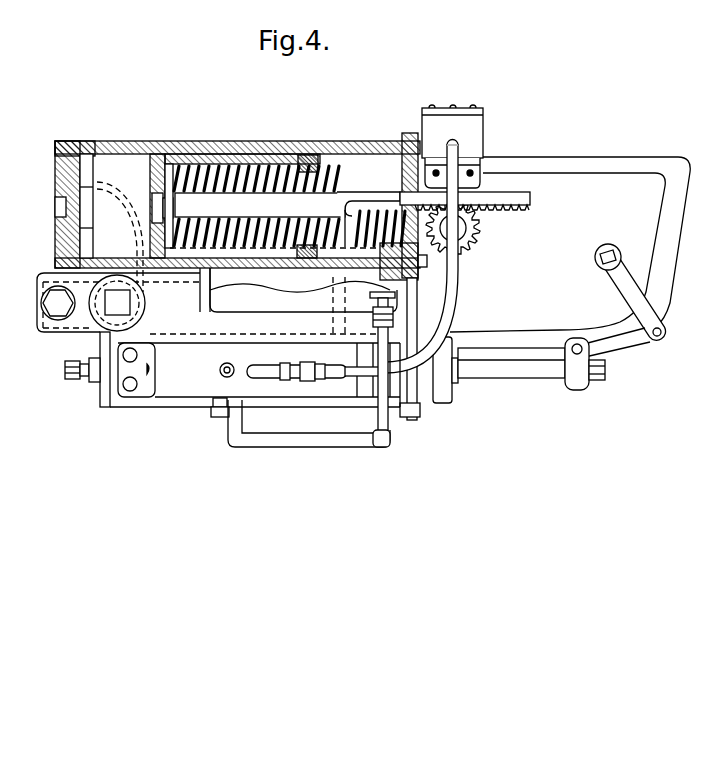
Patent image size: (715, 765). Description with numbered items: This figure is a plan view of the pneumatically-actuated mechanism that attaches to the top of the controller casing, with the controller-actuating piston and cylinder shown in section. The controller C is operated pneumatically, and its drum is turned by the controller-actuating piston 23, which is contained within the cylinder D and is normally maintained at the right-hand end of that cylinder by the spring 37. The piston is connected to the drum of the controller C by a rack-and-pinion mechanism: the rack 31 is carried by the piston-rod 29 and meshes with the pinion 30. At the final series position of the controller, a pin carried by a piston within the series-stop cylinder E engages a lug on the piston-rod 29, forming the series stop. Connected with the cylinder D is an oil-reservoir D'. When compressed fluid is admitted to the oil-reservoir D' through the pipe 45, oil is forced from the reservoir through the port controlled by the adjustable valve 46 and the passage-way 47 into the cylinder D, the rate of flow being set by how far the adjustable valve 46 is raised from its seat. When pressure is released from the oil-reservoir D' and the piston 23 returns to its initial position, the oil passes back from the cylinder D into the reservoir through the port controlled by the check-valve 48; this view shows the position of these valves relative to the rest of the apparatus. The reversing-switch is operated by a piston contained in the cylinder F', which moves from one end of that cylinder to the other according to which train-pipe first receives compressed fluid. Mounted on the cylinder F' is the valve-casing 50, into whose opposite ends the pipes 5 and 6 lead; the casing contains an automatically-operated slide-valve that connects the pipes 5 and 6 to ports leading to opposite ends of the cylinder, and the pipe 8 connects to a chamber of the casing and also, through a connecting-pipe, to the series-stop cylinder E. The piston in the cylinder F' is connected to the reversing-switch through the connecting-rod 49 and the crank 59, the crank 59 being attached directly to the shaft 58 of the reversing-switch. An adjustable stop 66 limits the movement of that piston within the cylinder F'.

The pipe 5 is at (152, 373).
The pipe 6 is at (363, 380).
The pipe 8 is at (458, 297).
The controller-actuating piston 23 is at (187, 158).
The piston-rod 29 is at (277, 212).
The pinion 30 is at (480, 234).
The rack 31 is at (518, 212).
The spring 37 is at (258, 172).
The pipe 45 is at (343, 445).
The adjustable valve 46 is at (50, 304).
The passage-way 47 is at (87, 210).
The check-valve 48 is at (107, 311).
The connecting-rod 49 is at (526, 372).
The valve-casing 50 is at (195, 380).
The shaft 58 is at (621, 256).
The crank 59 is at (648, 313).
The adjustable stop 66 is at (73, 380).
The cylinder D is at (241, 264).
The oil-reservoir D' is at (217, 301).
The series-stop cylinder E is at (475, 126).
The controller C is at (592, 185).
The cylinder F' is at (250, 387).